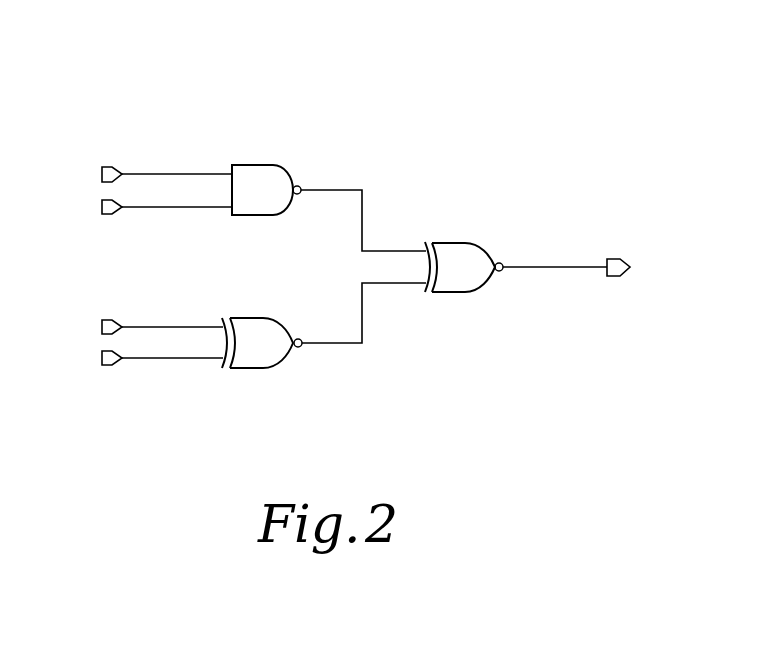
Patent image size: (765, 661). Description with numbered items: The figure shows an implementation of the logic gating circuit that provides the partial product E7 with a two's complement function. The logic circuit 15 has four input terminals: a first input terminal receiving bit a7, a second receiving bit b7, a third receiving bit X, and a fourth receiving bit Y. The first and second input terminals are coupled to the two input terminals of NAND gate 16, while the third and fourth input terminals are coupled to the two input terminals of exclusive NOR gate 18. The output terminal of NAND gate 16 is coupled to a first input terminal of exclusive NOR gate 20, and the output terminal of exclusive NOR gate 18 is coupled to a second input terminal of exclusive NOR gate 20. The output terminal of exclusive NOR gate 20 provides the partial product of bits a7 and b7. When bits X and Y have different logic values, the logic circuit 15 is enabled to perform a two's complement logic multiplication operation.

The logic circuit 15 is at (444, 90).
The NAND gate 16 is at (274, 165).
The exclusive NOR gate 18 is at (266, 318).
The exclusive NOR gate 20 is at (467, 243).